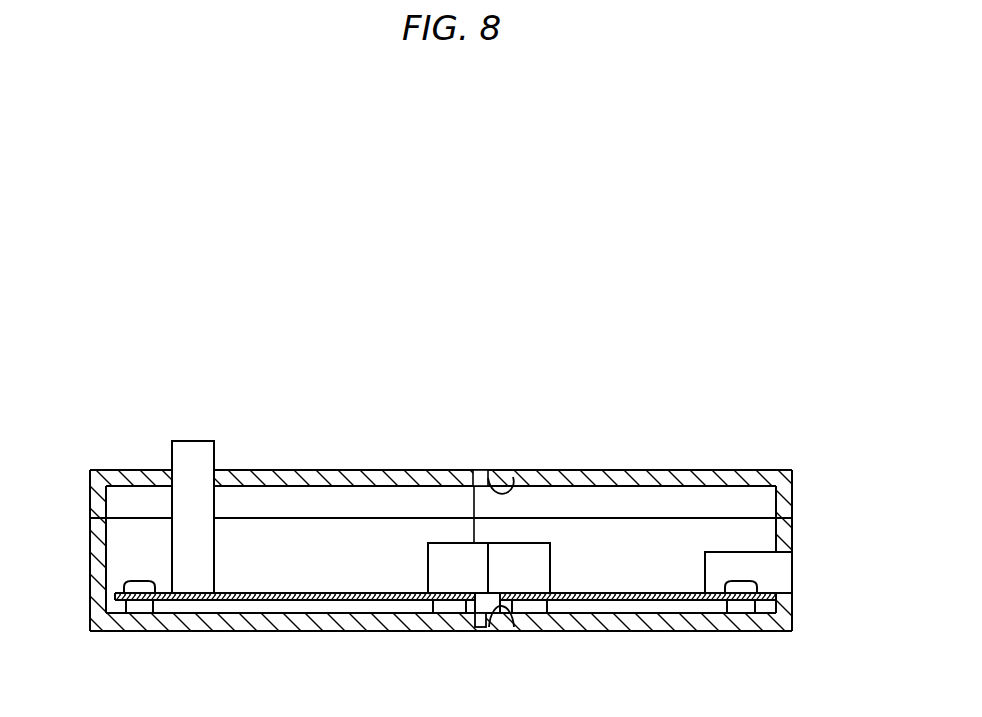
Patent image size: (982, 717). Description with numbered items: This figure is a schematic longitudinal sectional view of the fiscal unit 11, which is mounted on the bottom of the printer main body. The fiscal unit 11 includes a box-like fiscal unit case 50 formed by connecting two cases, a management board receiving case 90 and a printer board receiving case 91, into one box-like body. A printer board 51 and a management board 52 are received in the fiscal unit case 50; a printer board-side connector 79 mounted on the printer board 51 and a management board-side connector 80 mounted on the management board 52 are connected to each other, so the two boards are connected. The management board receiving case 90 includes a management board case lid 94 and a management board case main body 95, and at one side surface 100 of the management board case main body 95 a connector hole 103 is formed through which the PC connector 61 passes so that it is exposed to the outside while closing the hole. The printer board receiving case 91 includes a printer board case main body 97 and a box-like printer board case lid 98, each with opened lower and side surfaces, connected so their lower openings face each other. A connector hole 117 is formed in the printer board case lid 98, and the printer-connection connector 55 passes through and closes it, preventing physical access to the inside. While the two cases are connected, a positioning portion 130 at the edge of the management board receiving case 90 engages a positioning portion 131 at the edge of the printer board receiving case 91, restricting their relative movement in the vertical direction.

The fiscal unit 11 is at (447, 203).
The fiscal unit case 50 is at (445, 351).
The printer board 51 is at (195, 592).
The management board 52 is at (663, 631).
The printer-connection connector 55 is at (168, 455).
The PC connector 61 is at (795, 568).
The printer board-side connector 79 is at (445, 543).
The management board-side connector 80 is at (532, 543).
The management board receiving case 90 is at (663, 632).
The printer board receiving case 91 is at (243, 632).
The management board case lid 94 is at (783, 495).
The management board case main body 95 is at (795, 613).
The printer board case main body 97 is at (97, 562).
The printer board case lid 98 is at (90, 478).
The side surface 100 is at (787, 537).
The connector hole 103 is at (790, 555).
The connector hole 117 is at (213, 480).
The positioning portion 130 is at (513, 478).
The positioning portion 131 is at (478, 470).